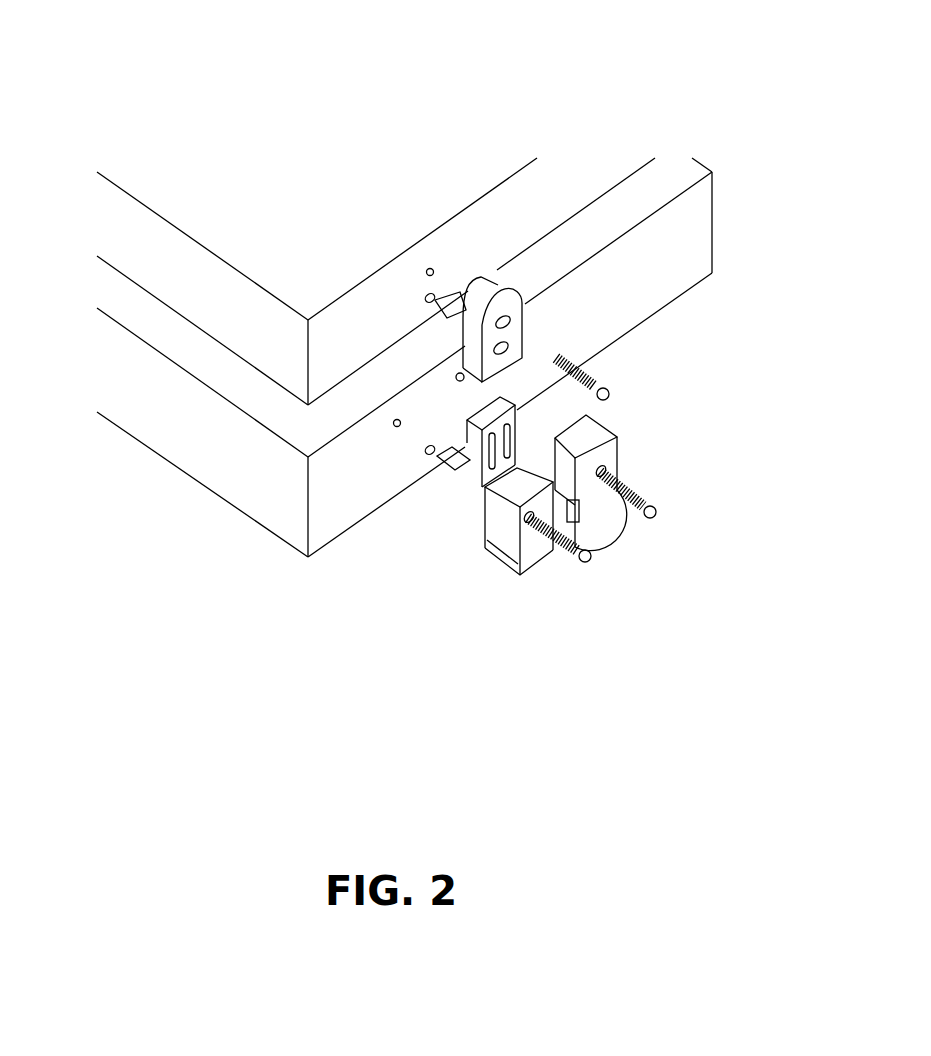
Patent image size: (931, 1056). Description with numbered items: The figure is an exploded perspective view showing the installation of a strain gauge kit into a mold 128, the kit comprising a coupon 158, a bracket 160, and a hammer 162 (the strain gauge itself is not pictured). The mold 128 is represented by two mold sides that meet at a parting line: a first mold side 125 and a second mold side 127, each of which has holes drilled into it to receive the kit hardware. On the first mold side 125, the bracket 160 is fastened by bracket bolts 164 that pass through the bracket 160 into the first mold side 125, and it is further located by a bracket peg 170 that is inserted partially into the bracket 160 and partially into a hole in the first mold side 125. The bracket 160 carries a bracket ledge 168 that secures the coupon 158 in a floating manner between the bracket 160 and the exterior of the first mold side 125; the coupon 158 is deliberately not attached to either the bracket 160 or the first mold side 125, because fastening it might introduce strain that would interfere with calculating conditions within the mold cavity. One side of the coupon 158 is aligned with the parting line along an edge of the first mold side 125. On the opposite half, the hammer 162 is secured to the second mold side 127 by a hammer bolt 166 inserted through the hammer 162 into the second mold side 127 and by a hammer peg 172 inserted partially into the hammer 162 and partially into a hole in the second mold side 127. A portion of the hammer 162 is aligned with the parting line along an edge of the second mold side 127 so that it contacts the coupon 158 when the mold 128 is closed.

The first mold side 125 is at (349, 487).
The second mold side 127 is at (350, 325).
The mold 128 is at (142, 153).
The coupon 158 is at (482, 417).
The bracket 160 is at (540, 565).
The hammer 162 is at (511, 316).
The bracket bolts 164 is at (655, 515).
The hammer bolt 166 is at (593, 382).
The bracket ledge 168 is at (572, 457).
The bracket peg 170 is at (452, 467).
The hammer peg 172 is at (452, 313).